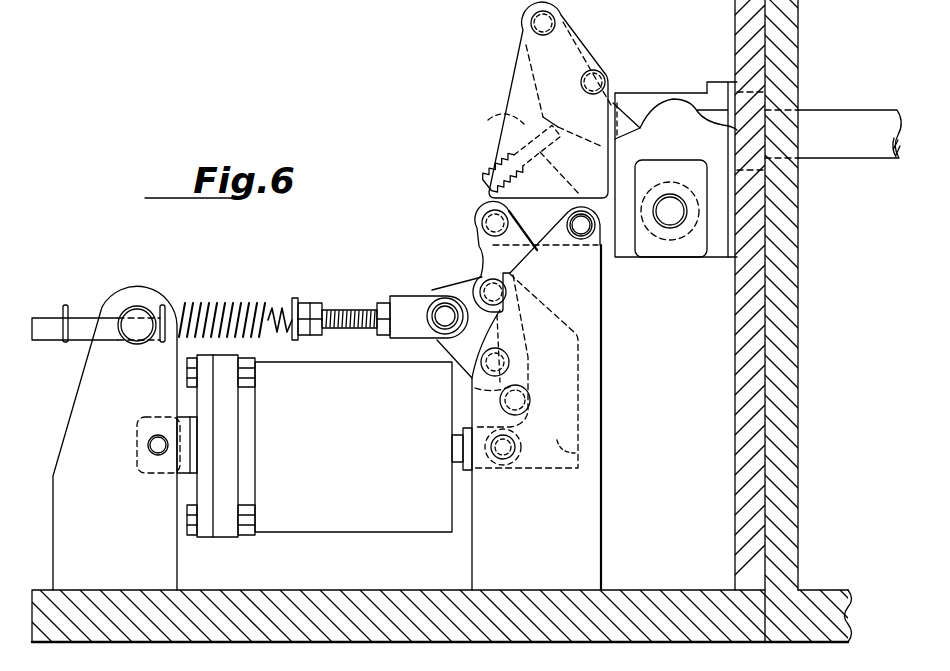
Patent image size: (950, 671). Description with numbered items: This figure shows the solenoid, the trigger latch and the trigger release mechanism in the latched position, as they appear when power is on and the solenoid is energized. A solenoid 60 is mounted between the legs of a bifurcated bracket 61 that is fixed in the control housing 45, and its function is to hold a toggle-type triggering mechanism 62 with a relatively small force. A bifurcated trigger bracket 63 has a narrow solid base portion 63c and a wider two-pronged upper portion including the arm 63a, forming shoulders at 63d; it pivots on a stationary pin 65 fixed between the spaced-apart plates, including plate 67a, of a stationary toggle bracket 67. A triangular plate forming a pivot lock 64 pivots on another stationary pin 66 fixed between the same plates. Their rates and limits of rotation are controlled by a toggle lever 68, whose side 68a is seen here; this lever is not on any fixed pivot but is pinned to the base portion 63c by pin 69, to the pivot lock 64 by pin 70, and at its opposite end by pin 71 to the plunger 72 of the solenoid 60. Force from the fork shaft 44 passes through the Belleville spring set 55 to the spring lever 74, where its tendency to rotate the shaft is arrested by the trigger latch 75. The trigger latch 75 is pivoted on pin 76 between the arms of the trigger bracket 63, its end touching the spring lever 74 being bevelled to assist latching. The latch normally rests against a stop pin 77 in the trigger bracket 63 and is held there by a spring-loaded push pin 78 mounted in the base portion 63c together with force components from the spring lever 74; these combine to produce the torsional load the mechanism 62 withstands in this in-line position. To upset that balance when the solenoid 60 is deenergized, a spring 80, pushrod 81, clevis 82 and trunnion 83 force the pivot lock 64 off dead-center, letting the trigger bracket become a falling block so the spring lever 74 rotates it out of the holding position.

The fork shaft 44 is at (853, 152).
The control housing 45 is at (373, 590).
The Belleville spring set 55 is at (662, 248).
The solenoid 60 is at (331, 461).
The bifurcated bracket 61 is at (93, 387).
The toggle-type triggering mechanism 62 is at (470, 164).
The trigger bracket 63 is at (514, 100).
The arm of trigger bracket 63a is at (520, 88).
The solid base portion 63c is at (538, 240).
The shoulders 63d is at (556, 197).
The pivot lock 64 is at (469, 286).
The stationary pin 65 is at (587, 229).
The stationary pin 66 is at (501, 361).
The toggle bracket 67 is at (610, 546).
The plate of toggle bracket 67a is at (574, 503).
The toggle lever 68 is at (580, 415).
The side of toggle lever 68a is at (557, 454).
The pin 69 is at (490, 221).
The pin 70 is at (507, 287).
The pin 71 is at (510, 461).
The plunger 72 is at (452, 450).
The spring lever 74 is at (714, 245).
The trigger latch 75 is at (623, 123).
The pin 76 is at (533, 22).
The stop pin 77 is at (601, 73).
The spring-loaded push pin 78 is at (487, 119).
The spring 80 is at (248, 305).
The pushrod 81 is at (345, 308).
The clevis 82 is at (403, 298).
The trunnion 83 is at (442, 306).